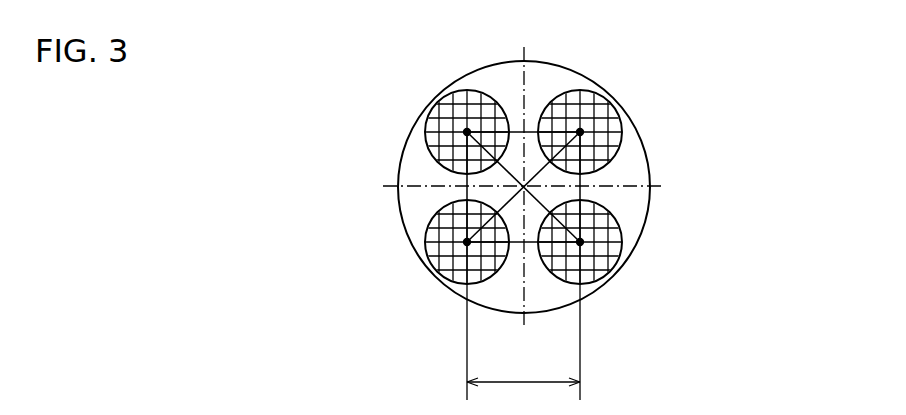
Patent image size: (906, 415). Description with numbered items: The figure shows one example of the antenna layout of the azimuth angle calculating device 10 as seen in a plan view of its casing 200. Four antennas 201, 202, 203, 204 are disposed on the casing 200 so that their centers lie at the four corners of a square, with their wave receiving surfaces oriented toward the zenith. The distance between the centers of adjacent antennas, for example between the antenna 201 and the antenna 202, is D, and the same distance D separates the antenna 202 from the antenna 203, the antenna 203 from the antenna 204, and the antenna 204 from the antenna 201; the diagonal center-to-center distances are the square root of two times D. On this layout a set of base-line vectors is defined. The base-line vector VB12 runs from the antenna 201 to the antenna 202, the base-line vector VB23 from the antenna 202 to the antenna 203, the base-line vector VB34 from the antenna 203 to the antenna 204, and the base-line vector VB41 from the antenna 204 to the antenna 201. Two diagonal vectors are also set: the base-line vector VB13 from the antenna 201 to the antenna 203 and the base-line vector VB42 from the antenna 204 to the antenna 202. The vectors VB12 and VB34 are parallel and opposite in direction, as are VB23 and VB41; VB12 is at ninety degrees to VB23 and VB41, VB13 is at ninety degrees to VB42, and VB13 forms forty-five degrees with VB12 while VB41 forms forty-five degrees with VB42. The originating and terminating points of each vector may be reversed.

The azimuth angle calculating device 10 is at (658, 74).
The casing 200 is at (583, 76).
The antenna 201 is at (623, 124).
The antenna 202 is at (426, 134).
The antenna 203 is at (425, 250).
The antenna 204 is at (622, 246).
The base-line vector VB12 is at (534, 132).
The base-line vector VB13 is at (490, 193).
The base-line vector VB23 is at (470, 178).
The base-line vector VB34 is at (536, 246).
The base-line vector VB41 is at (578, 178).
The base-line vector VB42 is at (560, 197).
The distance between antenna centers D is at (523, 325).